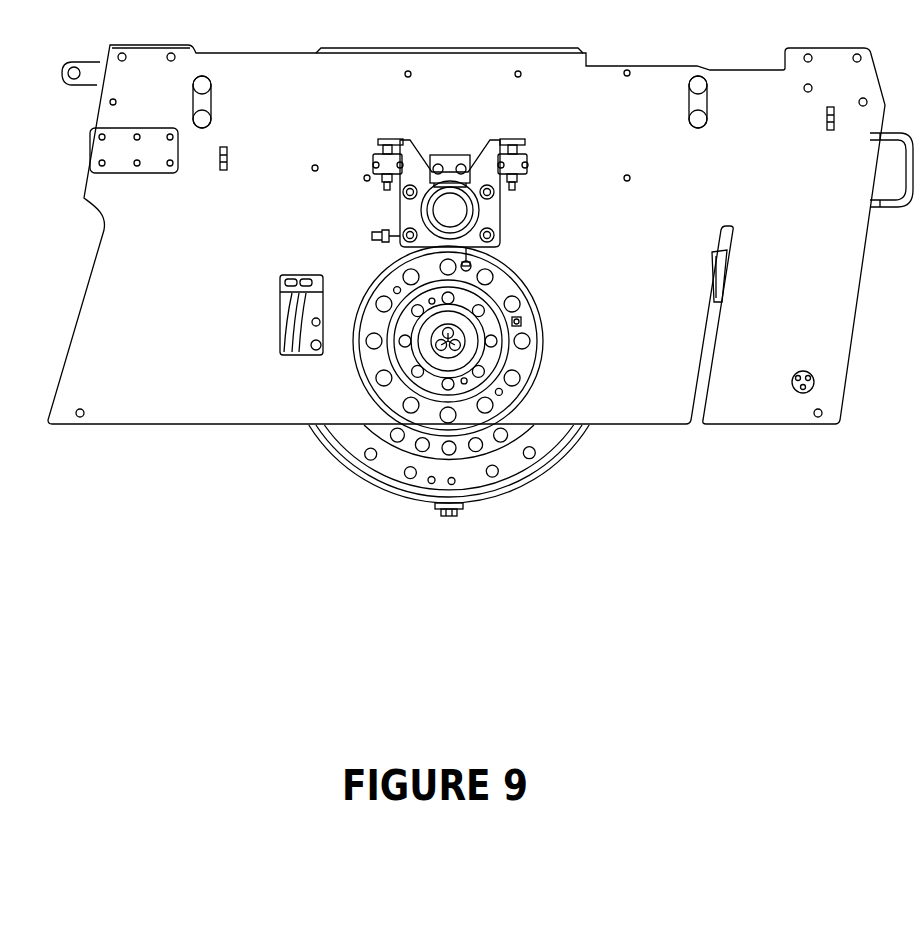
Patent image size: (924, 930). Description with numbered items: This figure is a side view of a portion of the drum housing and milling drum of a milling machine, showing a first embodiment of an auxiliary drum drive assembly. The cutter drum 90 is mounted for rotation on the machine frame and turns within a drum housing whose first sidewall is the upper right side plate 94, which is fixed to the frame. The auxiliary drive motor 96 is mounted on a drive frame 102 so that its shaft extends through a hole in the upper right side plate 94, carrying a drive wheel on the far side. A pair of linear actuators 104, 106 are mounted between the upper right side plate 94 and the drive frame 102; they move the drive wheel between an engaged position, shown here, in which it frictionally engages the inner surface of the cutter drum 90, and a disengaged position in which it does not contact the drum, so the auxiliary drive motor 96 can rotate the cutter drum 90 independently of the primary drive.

The cutter drum 90 is at (541, 483).
The upper right side plate 94 is at (628, 152).
The auxiliary drive motor 96 is at (488, 210).
The drive frame 102 is at (398, 207).
The linear actuator 104 is at (372, 163).
The linear actuator 106 is at (532, 167).